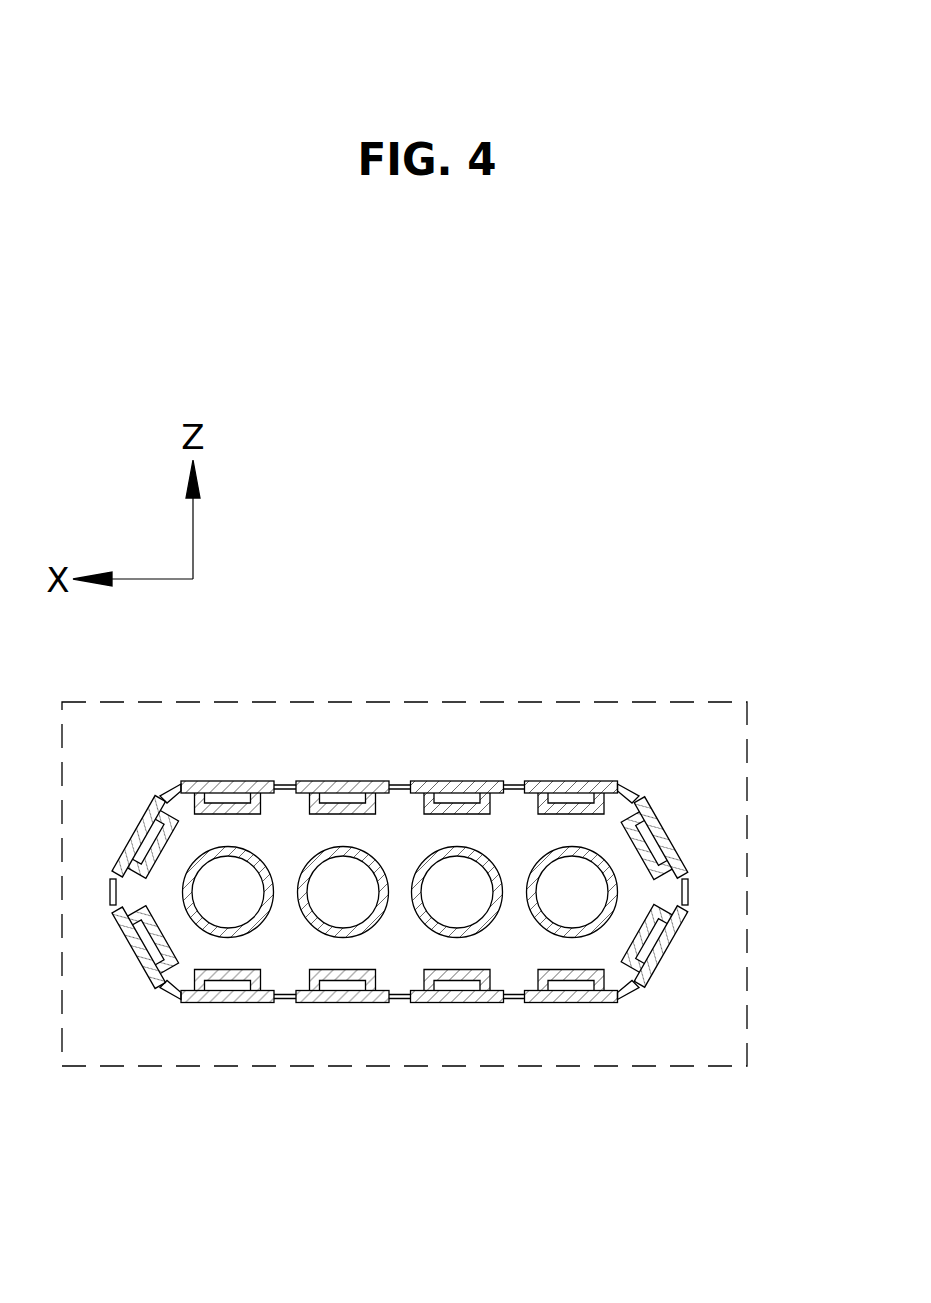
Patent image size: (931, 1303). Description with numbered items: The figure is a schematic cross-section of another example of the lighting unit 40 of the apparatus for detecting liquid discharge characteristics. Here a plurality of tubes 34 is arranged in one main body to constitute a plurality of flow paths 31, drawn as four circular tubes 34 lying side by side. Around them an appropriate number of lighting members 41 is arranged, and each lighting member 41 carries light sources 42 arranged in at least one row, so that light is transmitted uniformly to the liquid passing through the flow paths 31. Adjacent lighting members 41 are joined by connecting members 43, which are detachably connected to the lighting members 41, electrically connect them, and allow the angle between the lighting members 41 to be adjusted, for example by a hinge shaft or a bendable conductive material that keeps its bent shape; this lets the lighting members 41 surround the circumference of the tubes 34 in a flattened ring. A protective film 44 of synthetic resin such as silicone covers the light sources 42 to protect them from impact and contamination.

The lighting unit 40 is at (118, 672).
The flow path 31 is at (343, 889).
The tube 34 is at (228, 937).
The lighting member 41 is at (658, 833).
The light source 42 is at (655, 933).
The connecting member 43 is at (633, 788).
The protective film 44 is at (645, 975).